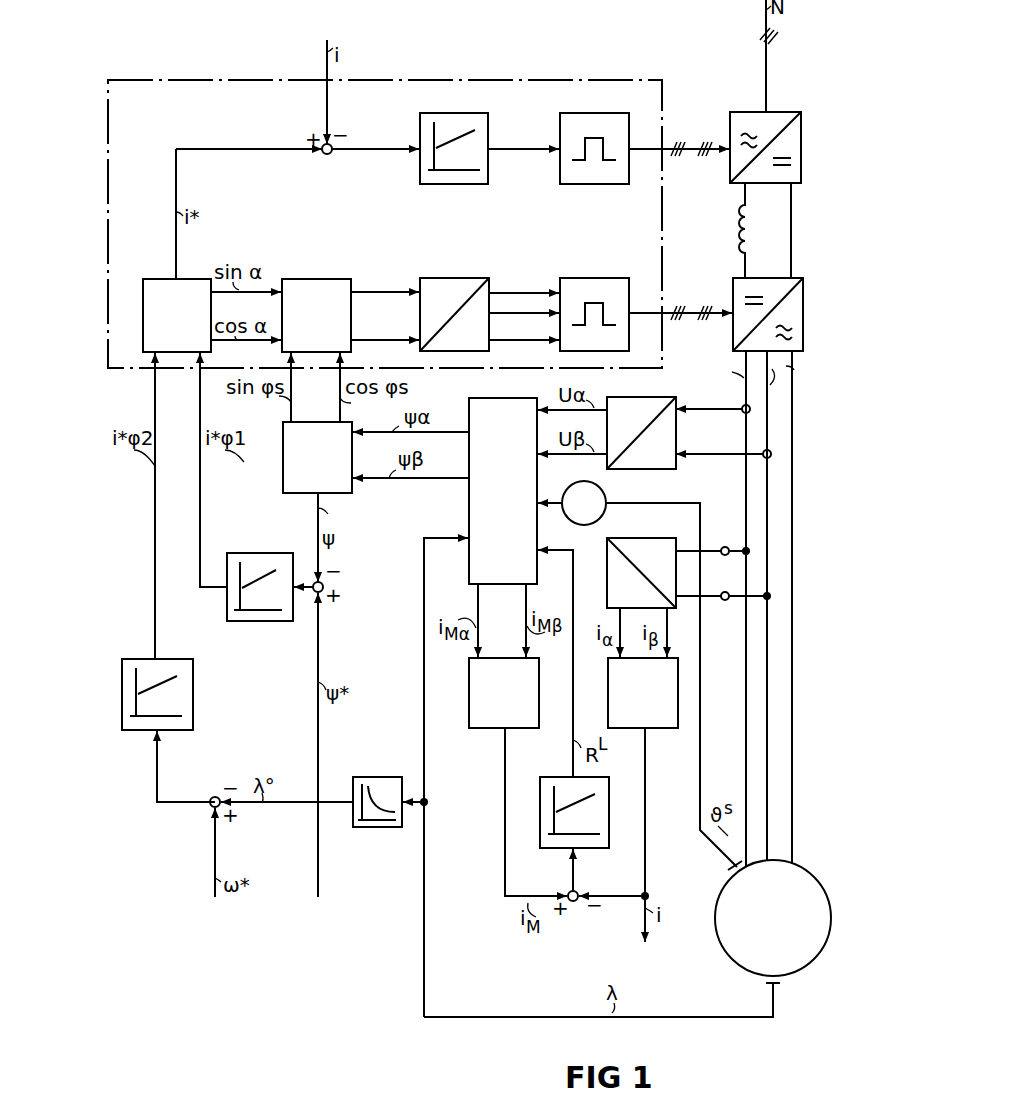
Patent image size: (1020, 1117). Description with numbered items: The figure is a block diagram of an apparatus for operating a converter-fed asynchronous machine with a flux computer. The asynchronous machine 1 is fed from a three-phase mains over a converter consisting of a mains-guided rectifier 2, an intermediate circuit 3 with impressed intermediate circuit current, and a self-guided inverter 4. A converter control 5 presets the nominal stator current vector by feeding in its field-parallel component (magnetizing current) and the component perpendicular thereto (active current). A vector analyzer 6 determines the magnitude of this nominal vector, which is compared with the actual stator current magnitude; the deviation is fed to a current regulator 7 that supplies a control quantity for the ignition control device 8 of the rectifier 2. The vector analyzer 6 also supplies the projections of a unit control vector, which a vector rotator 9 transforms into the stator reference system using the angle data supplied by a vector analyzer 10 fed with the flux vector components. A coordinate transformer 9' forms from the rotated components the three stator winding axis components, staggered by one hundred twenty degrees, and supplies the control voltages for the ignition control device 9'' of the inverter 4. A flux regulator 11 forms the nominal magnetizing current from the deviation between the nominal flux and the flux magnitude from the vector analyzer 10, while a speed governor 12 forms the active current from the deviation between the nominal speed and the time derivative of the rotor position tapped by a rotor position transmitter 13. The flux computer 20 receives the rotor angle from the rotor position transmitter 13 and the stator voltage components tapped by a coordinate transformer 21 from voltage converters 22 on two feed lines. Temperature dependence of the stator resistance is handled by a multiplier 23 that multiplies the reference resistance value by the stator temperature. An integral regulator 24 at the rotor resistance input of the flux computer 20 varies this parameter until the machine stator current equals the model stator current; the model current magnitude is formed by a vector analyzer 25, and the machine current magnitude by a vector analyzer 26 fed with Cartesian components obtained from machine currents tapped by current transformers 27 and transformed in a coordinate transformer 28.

The asynchronous machine 1 is at (716, 940).
The mains-guided rectifier 2 is at (726, 136).
The intermediate circuit 3 is at (818, 236).
The self-guided inverter 4 is at (728, 299).
The converter control 5 is at (588, 80).
The vector analyzer 6 is at (160, 279).
The current regulator 7 is at (437, 184).
The ignition control device 8 is at (580, 184).
The vector rotator 9 is at (316, 297).
The coordinate transformer 9' is at (454, 296).
The ignition control device 9'' is at (594, 296).
The vector analyzer 10 is at (283, 476).
The flux regulator 11 is at (248, 553).
The speed governor 12 is at (193, 697).
The rotor position transmitter 13 is at (780, 986).
The flux computer 20 is at (468, 410).
The coordinate transformer 21 is at (636, 397).
The voltage converters 22 is at (750, 411).
The multiplier 23 is at (603, 496).
The integral regulator 24 is at (546, 777).
The vector analyzer 25 is at (539, 699).
The vector analyzer 26 is at (608, 693).
The current transformers 27 is at (723, 573).
The coordinate transformer 28 is at (640, 538).